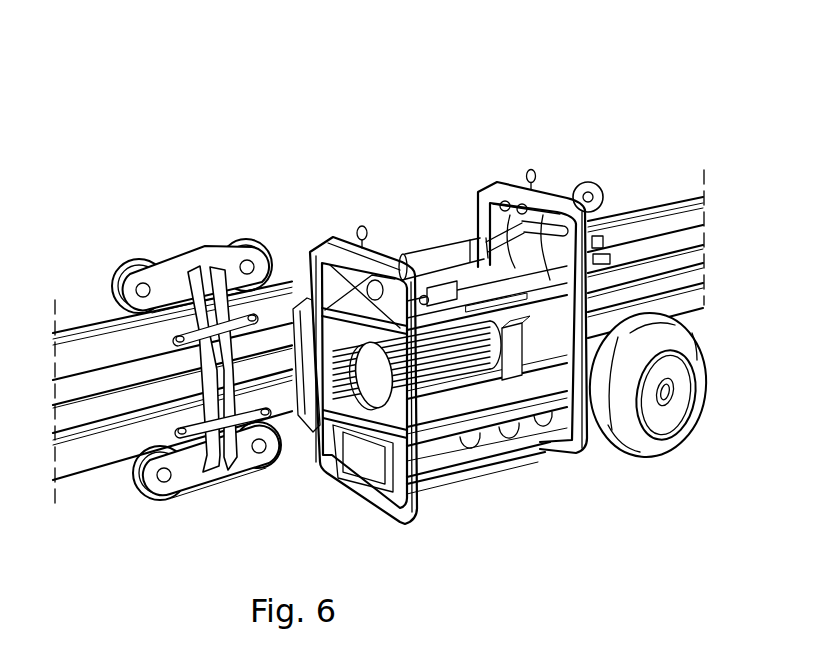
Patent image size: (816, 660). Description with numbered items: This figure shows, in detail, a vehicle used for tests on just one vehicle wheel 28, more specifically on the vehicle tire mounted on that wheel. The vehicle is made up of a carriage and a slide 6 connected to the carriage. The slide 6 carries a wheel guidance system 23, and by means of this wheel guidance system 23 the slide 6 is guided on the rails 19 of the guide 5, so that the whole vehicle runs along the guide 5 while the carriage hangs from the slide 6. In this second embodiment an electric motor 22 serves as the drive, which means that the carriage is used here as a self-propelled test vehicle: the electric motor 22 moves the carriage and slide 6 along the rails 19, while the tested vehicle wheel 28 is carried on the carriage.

The guide 5 is at (712, 228).
The slide 6 is at (203, 238).
The wheel guidance system 23 is at (105, 268).
The rails 19 is at (73, 367).
The electric motor 22 is at (450, 377).
The vehicle wheel 28 is at (650, 413).